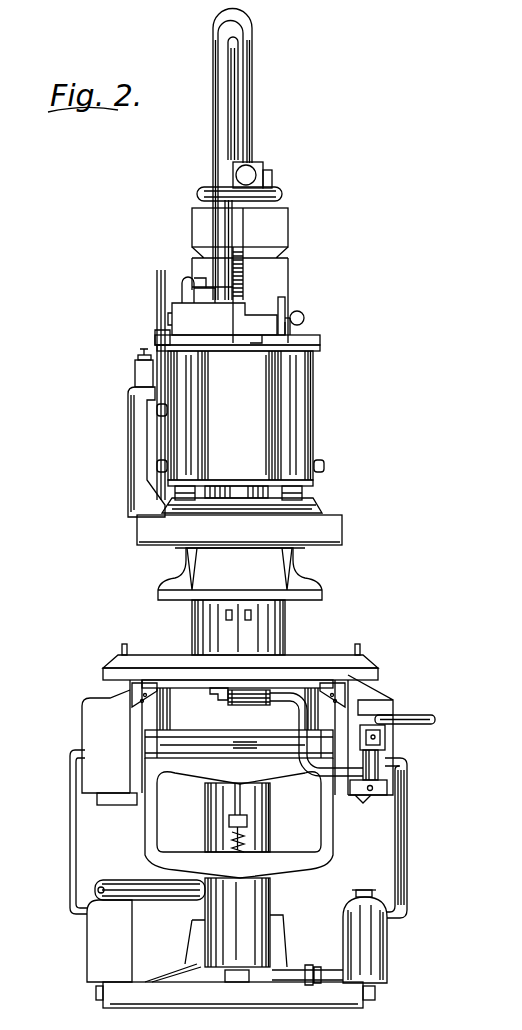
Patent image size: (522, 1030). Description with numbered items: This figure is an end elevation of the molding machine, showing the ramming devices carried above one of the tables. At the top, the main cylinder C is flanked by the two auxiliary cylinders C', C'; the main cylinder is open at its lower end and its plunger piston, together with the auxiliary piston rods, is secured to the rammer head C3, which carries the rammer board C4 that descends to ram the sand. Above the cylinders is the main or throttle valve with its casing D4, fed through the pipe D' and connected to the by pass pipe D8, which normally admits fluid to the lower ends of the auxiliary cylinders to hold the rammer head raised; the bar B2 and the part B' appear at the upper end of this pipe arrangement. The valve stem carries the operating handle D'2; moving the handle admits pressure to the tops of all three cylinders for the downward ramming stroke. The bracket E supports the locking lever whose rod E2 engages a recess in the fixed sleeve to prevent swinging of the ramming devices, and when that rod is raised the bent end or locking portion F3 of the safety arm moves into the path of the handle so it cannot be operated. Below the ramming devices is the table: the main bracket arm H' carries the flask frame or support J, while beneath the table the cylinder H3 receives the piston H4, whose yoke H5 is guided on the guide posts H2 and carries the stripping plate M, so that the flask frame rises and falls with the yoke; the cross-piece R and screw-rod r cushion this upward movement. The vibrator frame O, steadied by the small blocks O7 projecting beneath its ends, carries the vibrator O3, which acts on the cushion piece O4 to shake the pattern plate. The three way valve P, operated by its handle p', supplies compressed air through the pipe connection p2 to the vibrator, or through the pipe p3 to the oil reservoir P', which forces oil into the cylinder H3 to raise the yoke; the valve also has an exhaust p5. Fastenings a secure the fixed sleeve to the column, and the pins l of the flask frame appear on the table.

The pipe D' is at (248, 155).
The hand bar B2 is at (284, 194).
The screw spindle head B' is at (240, 275).
The by pass pipe D8 is at (195, 276).
The rod E2 is at (156, 305).
The casing D4 is at (212, 332).
The bent end or locking portion F3 is at (287, 301).
The operating handle D'2 is at (315, 311).
The main cylinder C is at (238, 422).
The auxiliary cylinders C' is at (240, 415).
The bracket E is at (131, 438).
The rammer head C3 is at (321, 508).
The rammer board C4 is at (340, 529).
The piston H4 is at (157, 584).
The cylinder H3 is at (287, 616).
The fastenings a is at (228, 621).
The flask frame or support J is at (362, 659).
The pins l is at (124, 644).
The vibrator frame O is at (183, 682).
The small blocks O7 is at (131, 696).
The main bracket arms H' is at (234, 740).
The cushion piece O4 is at (212, 695).
The vibrator O3 is at (253, 705).
The pipe connection p2 is at (306, 777).
The stripping plate M is at (228, 736).
The cross-piece R is at (239, 773).
The yoke H5 is at (152, 828).
The screw-rod r is at (250, 835).
The handle p' is at (417, 710).
The three way valve P is at (394, 752).
The exhaust p5 is at (374, 796).
The pipe p3 is at (70, 830).
The guide posts H2 is at (171, 901).
The oil reservoir P' is at (237, 936).